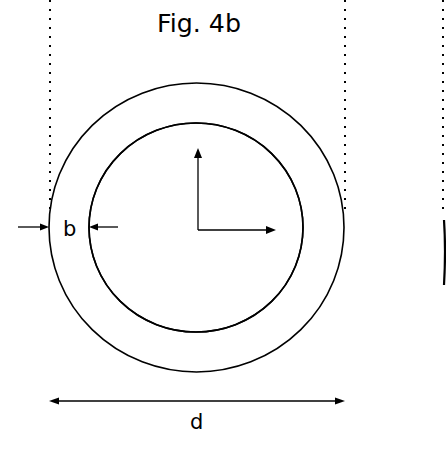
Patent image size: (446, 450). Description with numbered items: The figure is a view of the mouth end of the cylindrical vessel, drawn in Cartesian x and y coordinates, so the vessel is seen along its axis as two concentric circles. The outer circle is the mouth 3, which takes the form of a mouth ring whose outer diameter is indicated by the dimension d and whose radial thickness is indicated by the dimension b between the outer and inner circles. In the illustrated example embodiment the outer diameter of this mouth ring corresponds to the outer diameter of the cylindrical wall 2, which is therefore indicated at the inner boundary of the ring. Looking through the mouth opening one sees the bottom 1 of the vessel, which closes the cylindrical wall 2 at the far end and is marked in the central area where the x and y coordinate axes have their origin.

The bottom 1 is at (196, 227).
The cylindrical wall 2 is at (112, 289).
The mouth 3 is at (320, 199).